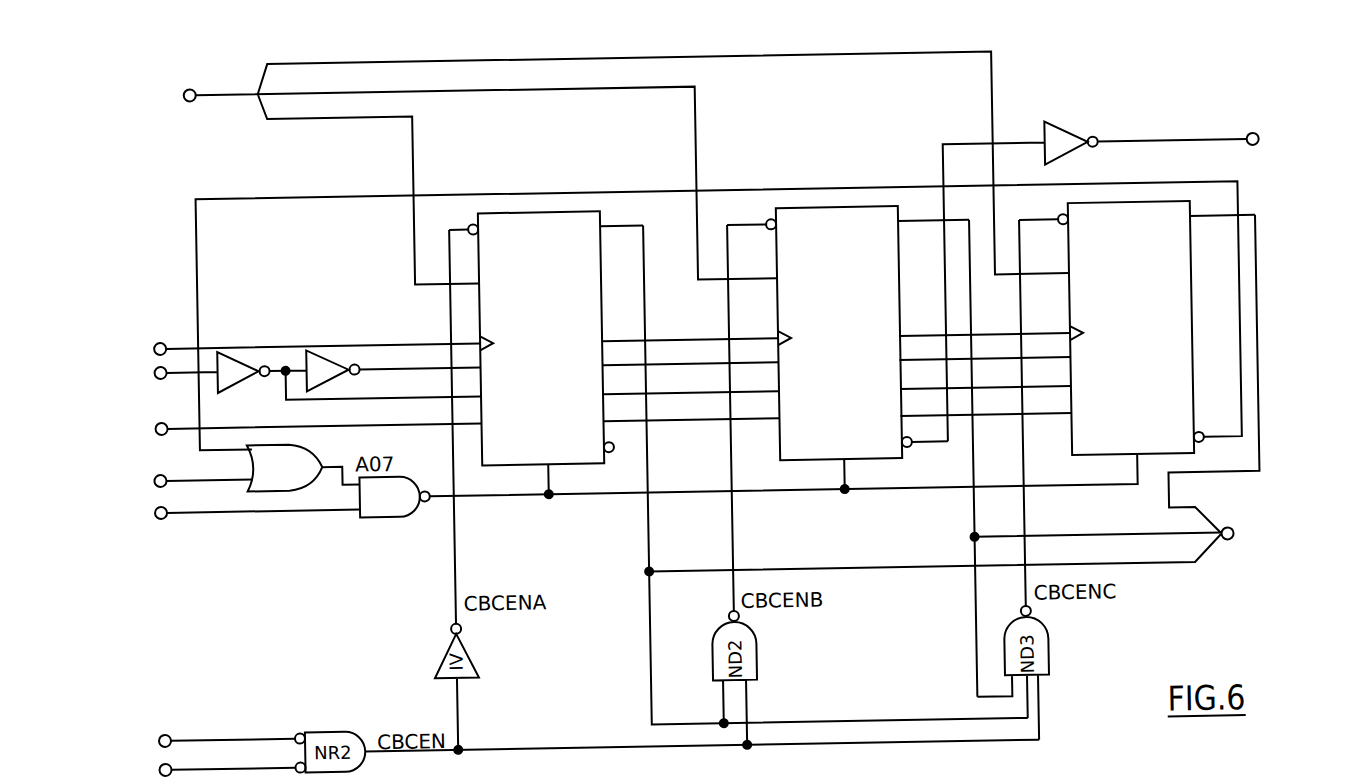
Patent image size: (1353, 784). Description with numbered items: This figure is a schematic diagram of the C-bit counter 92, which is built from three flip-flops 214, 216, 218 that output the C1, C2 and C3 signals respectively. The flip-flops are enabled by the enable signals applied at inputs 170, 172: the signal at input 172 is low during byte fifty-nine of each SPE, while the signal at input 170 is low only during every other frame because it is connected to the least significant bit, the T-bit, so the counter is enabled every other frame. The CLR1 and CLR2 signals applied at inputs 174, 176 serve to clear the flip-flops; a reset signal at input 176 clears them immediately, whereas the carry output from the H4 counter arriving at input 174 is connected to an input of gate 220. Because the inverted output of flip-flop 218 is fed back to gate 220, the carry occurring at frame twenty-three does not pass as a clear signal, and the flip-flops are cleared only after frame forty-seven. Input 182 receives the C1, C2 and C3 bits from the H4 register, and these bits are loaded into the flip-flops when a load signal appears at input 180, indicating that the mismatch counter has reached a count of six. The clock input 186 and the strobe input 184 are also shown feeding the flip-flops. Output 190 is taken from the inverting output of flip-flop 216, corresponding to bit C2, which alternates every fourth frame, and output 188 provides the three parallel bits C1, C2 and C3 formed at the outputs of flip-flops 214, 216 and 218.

The C-bit counter 92 is at (963, 39).
The input 182 is at (195, 93).
The CLK clock input 186 is at (159, 334).
The input 180 is at (161, 371).
The STB8 strobe input 184 is at (161, 427).
The input 174 is at (164, 468).
The input 176 is at (162, 510).
The input 170 is at (161, 726).
The input 172 is at (163, 756).
The gate 220 is at (297, 437).
The flip-flop 214 is at (562, 464).
The flip-flop 216 is at (822, 462).
The flip-flop 218 is at (1110, 462).
The output 190 is at (1257, 156).
The output 188 is at (1227, 537).